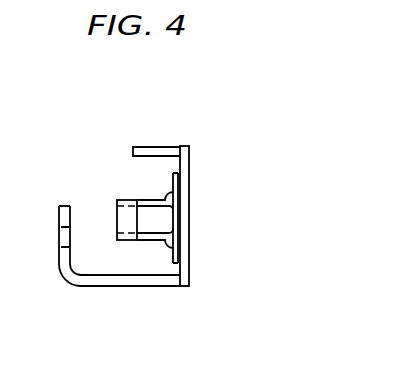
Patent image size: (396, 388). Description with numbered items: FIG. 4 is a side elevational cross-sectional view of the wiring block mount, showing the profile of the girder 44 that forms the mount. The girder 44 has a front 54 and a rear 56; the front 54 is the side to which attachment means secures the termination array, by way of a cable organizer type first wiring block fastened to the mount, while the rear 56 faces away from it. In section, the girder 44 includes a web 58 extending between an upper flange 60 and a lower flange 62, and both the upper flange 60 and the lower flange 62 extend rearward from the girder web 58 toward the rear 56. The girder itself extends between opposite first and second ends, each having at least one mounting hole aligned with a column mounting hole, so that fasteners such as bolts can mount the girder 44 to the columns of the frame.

The girder 44 is at (190, 164).
The front 54 is at (213, 203).
The rear 56 is at (88, 173).
The web 58 is at (190, 249).
The upper flange 60 is at (147, 146).
The lower flange 62 is at (127, 286).